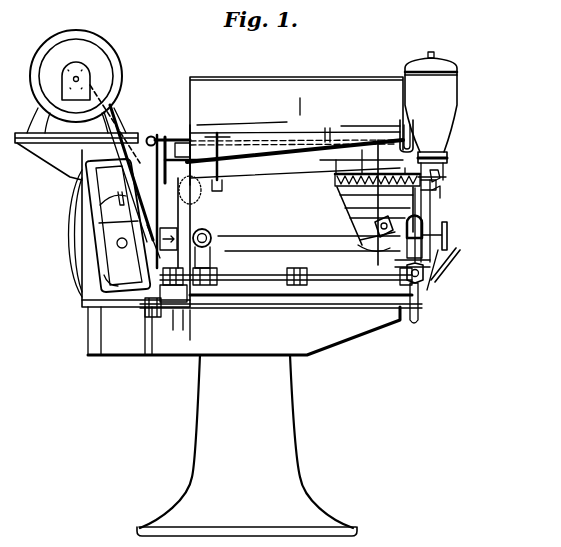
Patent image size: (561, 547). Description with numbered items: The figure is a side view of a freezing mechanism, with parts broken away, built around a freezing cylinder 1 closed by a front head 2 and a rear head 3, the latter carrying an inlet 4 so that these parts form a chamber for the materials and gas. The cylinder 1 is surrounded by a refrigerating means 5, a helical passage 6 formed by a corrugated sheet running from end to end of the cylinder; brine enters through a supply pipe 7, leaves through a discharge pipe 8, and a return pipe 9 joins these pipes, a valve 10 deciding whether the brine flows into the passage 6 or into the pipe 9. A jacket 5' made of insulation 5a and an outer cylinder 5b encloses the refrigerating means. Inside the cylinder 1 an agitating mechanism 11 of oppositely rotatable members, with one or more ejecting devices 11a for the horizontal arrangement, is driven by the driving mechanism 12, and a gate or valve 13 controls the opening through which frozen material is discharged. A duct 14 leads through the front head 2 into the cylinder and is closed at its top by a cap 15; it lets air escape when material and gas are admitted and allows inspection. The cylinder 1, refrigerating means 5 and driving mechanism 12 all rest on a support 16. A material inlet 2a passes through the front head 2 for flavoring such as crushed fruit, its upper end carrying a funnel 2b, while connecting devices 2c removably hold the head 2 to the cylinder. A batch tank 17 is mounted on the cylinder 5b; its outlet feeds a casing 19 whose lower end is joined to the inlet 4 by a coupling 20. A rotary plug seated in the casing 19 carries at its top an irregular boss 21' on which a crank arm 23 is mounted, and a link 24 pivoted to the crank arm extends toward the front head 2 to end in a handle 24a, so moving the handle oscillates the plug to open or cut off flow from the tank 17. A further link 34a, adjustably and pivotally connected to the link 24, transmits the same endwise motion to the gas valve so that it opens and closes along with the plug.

The freezing cylinder 1 is at (299, 188).
The front head 2 is at (133, 546).
The material inlet 2a is at (430, 183).
The funnel 2b is at (453, 105).
The connecting devices 2c is at (449, 224).
The rear head 3 is at (195, 217).
The inlet 4 is at (172, 124).
The refrigerating means 5 is at (370, 172).
The insulation 5a is at (403, 174).
The cylinder 5b is at (350, 176).
The jacket 5' is at (389, 202).
The helical passage 6 is at (341, 176).
The supply pipe 7 is at (452, 255).
The discharge pipe 8 is at (212, 246).
The return pipe 9 is at (274, 280).
The valve 10 is at (428, 286).
The agitating mechanism 11 is at (362, 248).
The ejecting devices 11a is at (368, 222).
The driving mechanism 12 is at (208, 230).
The gate or valve 13 is at (432, 278).
The duct 14 is at (440, 186).
The cap 15 is at (440, 176).
The support 16 is at (285, 414).
The batch tank 17 is at (312, 106).
The casing 19 is at (242, 120).
The coupling 20 is at (118, 225).
The boss 21' is at (203, 140).
The crank arm 23 is at (148, 139).
The link 24 is at (358, 121).
The handle 24a is at (400, 122).
The link 34a is at (282, 162).